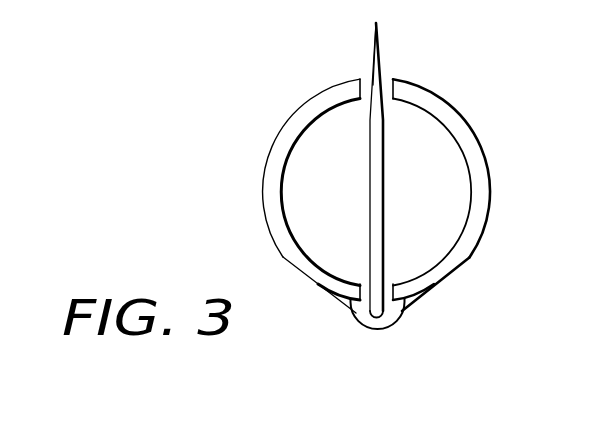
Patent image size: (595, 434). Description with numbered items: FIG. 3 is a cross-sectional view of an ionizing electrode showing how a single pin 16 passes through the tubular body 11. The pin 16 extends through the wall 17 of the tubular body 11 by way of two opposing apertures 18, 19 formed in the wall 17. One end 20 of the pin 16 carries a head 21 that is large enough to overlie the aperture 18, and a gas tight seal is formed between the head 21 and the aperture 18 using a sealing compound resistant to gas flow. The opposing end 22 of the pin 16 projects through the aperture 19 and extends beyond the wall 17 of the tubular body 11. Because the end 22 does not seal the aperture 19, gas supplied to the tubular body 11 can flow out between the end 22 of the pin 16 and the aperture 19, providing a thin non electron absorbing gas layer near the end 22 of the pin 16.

The tubular body 11 is at (307, 100).
The pin 16 is at (377, 164).
The wall 17 is at (477, 196).
The aperture 18 is at (392, 268).
The aperture 19 is at (391, 105).
The end of pin 20 is at (378, 277).
The head 21 is at (384, 322).
The end of pin 22 is at (373, 84).